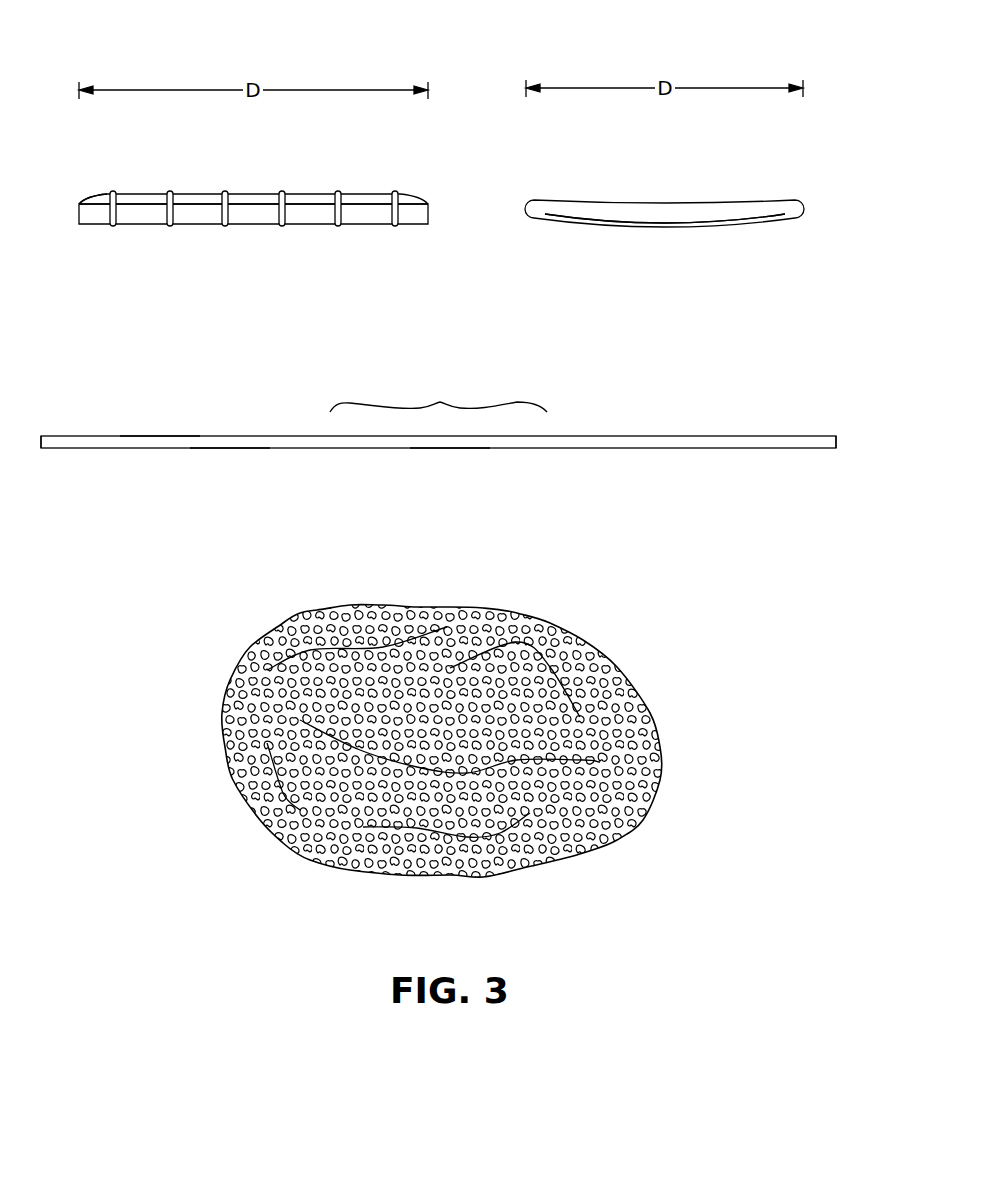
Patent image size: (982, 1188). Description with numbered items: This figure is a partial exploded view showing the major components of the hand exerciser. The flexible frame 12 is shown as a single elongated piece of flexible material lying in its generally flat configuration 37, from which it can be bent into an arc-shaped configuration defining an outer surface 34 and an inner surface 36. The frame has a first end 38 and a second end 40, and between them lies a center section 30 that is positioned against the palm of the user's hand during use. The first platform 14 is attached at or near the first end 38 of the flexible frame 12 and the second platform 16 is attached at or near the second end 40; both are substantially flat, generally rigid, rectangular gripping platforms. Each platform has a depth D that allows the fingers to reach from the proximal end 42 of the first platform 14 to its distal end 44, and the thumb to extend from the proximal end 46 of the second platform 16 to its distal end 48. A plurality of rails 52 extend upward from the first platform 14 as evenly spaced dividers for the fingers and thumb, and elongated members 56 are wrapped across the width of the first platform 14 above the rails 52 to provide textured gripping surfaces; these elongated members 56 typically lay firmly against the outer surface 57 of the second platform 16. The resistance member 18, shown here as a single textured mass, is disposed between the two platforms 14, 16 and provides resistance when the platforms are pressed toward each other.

The flexible frame 12 is at (668, 434).
The first platform 14 is at (261, 213).
The second platform 16 is at (690, 214).
The resistance member 18 is at (260, 797).
The center section 30 is at (443, 392).
The outer surface 34 is at (162, 422).
The inner surface 36 is at (451, 465).
The flat configuration 37 is at (223, 468).
The first end 38 is at (44, 465).
The second end 40 is at (836, 465).
The proximal end 42 is at (428, 182).
The distal end 44 is at (82, 182).
The proximal end 46 is at (530, 184).
The distal end 48 is at (802, 184).
The rails 52 is at (156, 196).
The elongated members 56 is at (110, 212).
The outer surface 57 is at (641, 240).